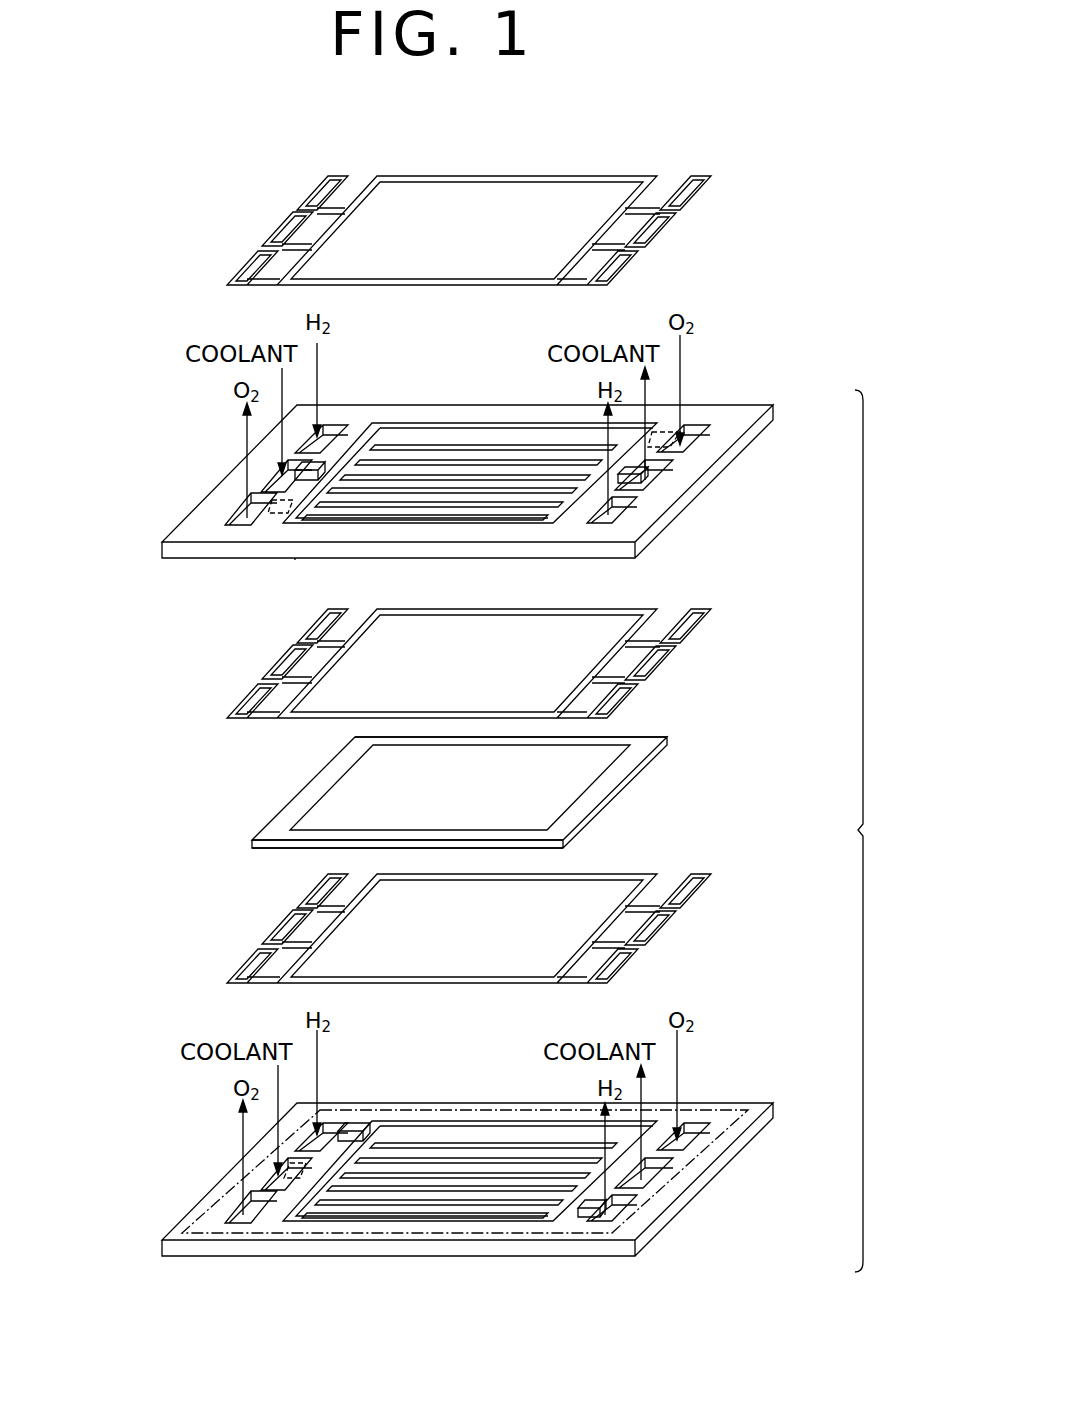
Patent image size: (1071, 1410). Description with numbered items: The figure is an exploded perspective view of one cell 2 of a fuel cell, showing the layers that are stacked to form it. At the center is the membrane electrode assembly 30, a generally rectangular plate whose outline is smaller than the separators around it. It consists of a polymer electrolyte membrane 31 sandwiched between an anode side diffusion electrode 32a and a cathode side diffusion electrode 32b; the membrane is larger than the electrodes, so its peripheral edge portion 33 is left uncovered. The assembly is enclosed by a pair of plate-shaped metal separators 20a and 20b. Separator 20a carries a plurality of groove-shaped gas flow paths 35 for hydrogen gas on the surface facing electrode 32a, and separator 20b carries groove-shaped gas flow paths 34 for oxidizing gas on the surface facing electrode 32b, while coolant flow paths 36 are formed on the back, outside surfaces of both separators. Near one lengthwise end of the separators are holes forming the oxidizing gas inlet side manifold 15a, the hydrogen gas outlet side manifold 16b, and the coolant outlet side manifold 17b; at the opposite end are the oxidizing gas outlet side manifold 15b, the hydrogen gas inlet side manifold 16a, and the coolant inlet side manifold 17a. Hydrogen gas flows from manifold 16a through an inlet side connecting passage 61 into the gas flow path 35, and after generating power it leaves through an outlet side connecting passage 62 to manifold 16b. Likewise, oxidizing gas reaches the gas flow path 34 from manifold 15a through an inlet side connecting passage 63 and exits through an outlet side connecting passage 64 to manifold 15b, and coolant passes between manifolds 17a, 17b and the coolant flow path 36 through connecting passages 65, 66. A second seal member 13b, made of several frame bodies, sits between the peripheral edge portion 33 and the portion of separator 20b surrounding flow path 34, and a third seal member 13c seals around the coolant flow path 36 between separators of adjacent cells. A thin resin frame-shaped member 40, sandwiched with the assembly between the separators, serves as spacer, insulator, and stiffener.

The cell 2 is at (871, 831).
The second seal member 13b is at (242, 648).
The third seal member 13c is at (252, 190).
The oxidizing gas inlet side manifold 15a is at (230, 521).
The oxidizing gas outlet side manifold 15b is at (688, 452).
The hydrogen gas inlet side manifold 16a is at (612, 518).
The hydrogen gas outlet side manifold 16b is at (330, 448).
The coolant inlet side manifold 17a is at (625, 482).
The coolant outlet side manifold 17b is at (265, 485).
The separator 20a is at (160, 1252).
The separator 20b is at (163, 550).
The membrane electrode assembly 30 is at (100, 745).
The electrolyte membrane 31 is at (295, 828).
The anode side diffusion electrode 32a is at (290, 850).
The cathode side diffusion electrode 32b is at (312, 803).
The peripheral edge portion 33 is at (620, 768).
The gas flow path for oxidizing gas 34 is at (295, 560).
The gas flow path for hydrogen gas 35 is at (457, 1190).
The coolant flow path 36 is at (498, 456).
The frame-shaped member 40 is at (347, 1235).
The inlet side connecting passage 61 is at (578, 1214).
The outlet side connecting passage 62 is at (345, 1127).
The inlet side connecting passage 63 is at (270, 514).
The outlet side connecting passage 64 is at (662, 437).
The inlet side connecting passage 65 is at (642, 486).
The outlet side connecting passage 66 is at (322, 468).